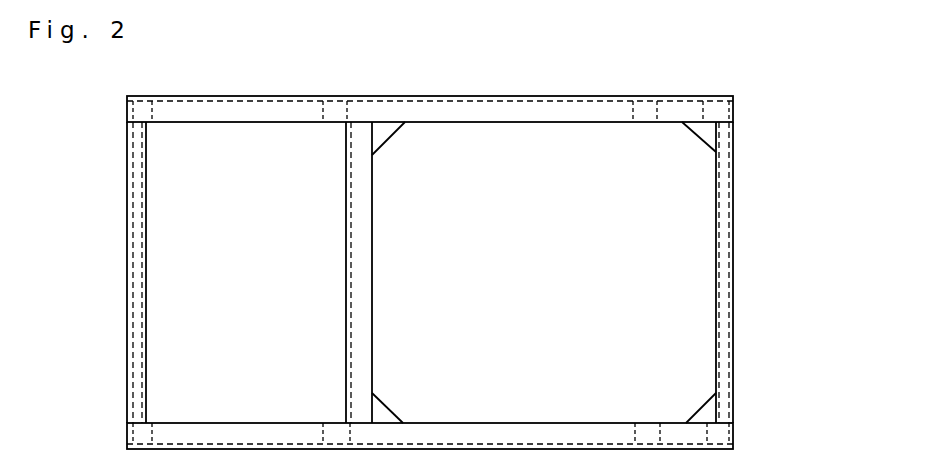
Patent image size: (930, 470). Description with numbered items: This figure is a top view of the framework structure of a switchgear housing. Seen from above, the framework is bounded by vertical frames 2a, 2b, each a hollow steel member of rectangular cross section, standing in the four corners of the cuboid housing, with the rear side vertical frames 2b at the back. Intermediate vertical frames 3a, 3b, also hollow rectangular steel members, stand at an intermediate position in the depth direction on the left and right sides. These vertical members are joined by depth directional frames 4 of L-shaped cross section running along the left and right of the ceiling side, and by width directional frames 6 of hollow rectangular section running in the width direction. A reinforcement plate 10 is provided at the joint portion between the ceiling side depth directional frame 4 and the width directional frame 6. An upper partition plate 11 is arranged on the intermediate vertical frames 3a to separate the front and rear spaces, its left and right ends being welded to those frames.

The vertical frame 2a is at (137, 108).
The rear side vertical frame 2b is at (725, 104).
The intermediate vertical frame 3a is at (338, 108).
The intermediate vertical frame 3b is at (642, 108).
The depth directional frame 4 is at (444, 96).
The width directional frame 6 is at (128, 270).
The reinforcement plate 10 is at (700, 140).
The upper partition plate 11 is at (346, 272).